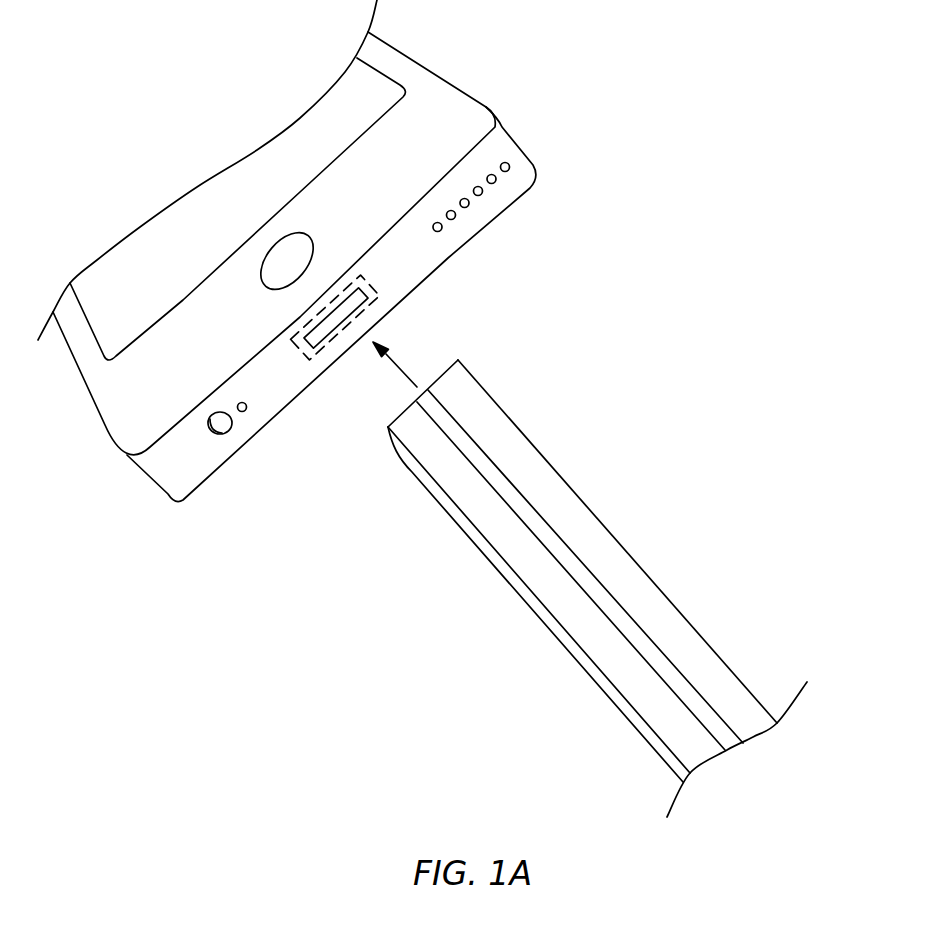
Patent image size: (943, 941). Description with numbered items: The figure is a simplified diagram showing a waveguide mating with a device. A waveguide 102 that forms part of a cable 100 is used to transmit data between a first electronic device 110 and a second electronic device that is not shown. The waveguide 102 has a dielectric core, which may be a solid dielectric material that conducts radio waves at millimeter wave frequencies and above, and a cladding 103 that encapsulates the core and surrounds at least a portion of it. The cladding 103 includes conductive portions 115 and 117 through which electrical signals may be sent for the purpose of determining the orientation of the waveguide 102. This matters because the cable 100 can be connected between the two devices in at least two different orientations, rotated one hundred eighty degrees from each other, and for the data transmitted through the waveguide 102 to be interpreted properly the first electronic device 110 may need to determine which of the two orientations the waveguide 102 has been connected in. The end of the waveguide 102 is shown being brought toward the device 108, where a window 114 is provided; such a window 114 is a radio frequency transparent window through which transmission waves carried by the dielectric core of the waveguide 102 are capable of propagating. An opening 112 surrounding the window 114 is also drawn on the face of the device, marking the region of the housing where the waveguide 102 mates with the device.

The cable 100 is at (748, 554).
The first electronic device 110 is at (453, 83).
The waveguide 102 is at (527, 437).
The cladding 103 is at (435, 482).
The device 108 is at (373, 292).
The receptacle opening 112 is at (353, 283).
The window 114 is at (325, 343).
The conductive portion 115 is at (537, 567).
The conductive portion 117 is at (590, 542).